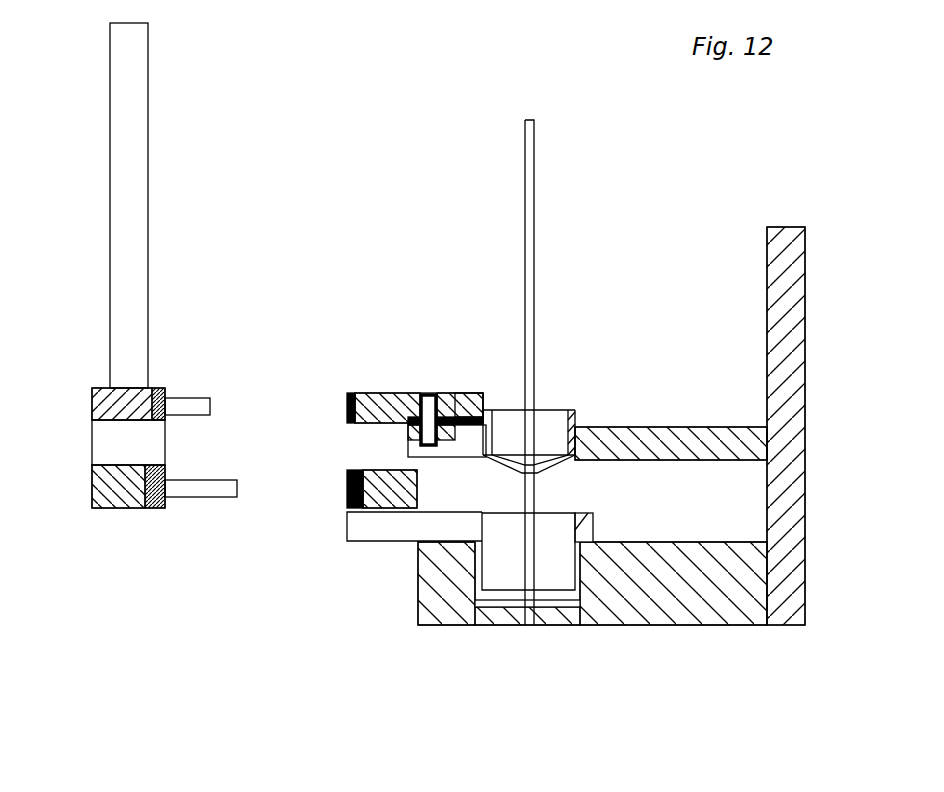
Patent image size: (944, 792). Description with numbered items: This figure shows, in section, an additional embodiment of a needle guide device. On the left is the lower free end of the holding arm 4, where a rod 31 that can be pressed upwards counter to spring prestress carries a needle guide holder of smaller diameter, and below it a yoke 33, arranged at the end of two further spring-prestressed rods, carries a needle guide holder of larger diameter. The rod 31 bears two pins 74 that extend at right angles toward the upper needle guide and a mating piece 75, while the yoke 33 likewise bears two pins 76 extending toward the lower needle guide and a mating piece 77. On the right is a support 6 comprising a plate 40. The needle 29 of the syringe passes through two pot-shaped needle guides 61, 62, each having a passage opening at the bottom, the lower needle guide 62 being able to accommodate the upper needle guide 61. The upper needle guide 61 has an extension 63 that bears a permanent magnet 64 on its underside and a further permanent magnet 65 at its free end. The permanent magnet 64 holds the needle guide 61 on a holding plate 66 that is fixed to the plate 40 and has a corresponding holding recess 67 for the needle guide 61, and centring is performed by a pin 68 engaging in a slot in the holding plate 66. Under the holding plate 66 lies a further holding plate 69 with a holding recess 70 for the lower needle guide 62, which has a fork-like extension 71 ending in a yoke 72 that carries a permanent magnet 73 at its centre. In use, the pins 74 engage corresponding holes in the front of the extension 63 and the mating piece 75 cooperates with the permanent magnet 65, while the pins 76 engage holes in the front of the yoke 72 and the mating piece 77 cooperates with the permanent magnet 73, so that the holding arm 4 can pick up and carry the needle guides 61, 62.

The holding arm 4 is at (131, 293).
The rod 31 is at (118, 302).
The yoke 33 is at (95, 485).
The pins 74 is at (185, 405).
The mating piece 75 is at (157, 390).
The pins 76 is at (210, 498).
The mating piece 77 is at (151, 508).
The support 6 is at (591, 399).
The plate 40 is at (795, 325).
The needle 29 is at (533, 312).
The needle guide 61 is at (582, 405).
The needle guide 62 is at (597, 525).
The extension 63 is at (391, 400).
The permanent magnet 64 is at (462, 412).
The permanent magnet 65 is at (348, 402).
The holding plate 66 is at (665, 432).
The holding recess 67 is at (473, 432).
The pin 68 is at (428, 415).
The holding plate 69 is at (690, 605).
The holding recess 70 is at (578, 606).
The fork-like extension 71 is at (392, 541).
The yoke 72 is at (382, 490).
The permanent magnet 73 is at (347, 492).